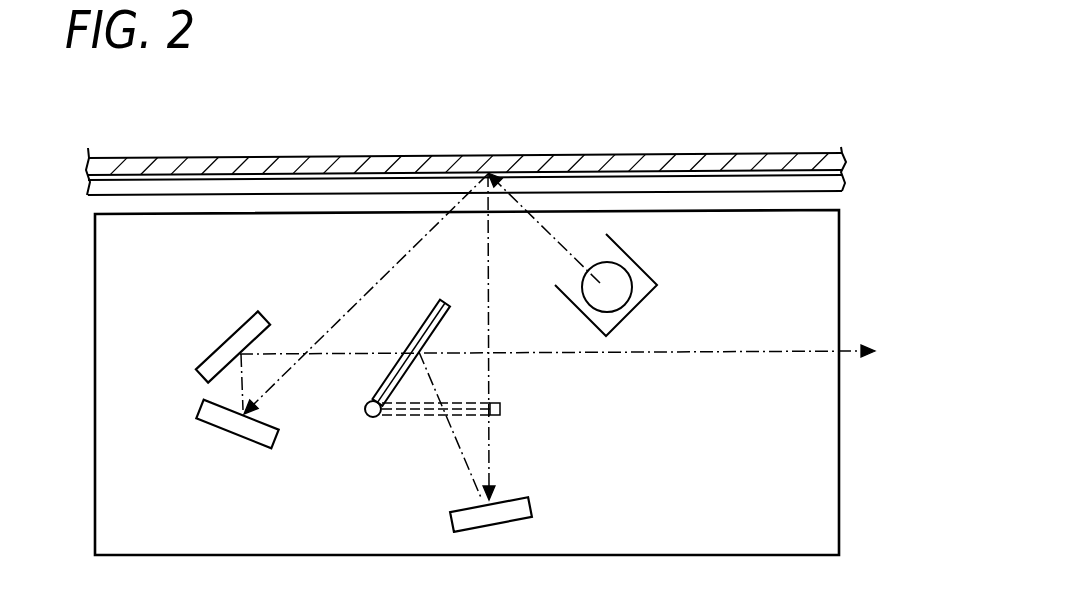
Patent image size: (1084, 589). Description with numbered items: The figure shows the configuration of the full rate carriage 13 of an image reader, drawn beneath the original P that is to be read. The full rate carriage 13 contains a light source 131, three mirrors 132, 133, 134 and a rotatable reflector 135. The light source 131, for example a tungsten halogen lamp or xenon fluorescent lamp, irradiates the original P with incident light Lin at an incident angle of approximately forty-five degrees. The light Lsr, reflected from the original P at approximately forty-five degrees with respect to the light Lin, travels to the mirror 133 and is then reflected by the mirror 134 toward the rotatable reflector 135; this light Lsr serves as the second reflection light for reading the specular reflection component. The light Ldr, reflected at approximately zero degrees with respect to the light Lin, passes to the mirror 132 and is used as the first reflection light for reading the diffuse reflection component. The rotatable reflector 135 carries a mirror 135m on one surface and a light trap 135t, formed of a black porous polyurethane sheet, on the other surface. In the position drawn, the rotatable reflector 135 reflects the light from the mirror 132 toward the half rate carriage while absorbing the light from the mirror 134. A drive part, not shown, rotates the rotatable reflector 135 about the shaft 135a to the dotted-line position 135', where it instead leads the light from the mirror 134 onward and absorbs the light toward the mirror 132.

The full rate carriage 13 is at (848, 281).
The original P is at (636, 154).
The light source 131 is at (632, 260).
The mirror 132 is at (533, 507).
The mirror 133 is at (263, 447).
The mirror 134 is at (262, 318).
The rotatable reflector 135 is at (413, 359).
The shaft 135a is at (366, 414).
The light trap 135t is at (416, 341).
The mirror 135m is at (431, 323).
The rotatable reflector position 135' is at (486, 407).
The incident light Lin is at (544, 228).
The specular reflection light Lsr is at (366, 294).
The diffuse reflection light Ldr is at (474, 426).